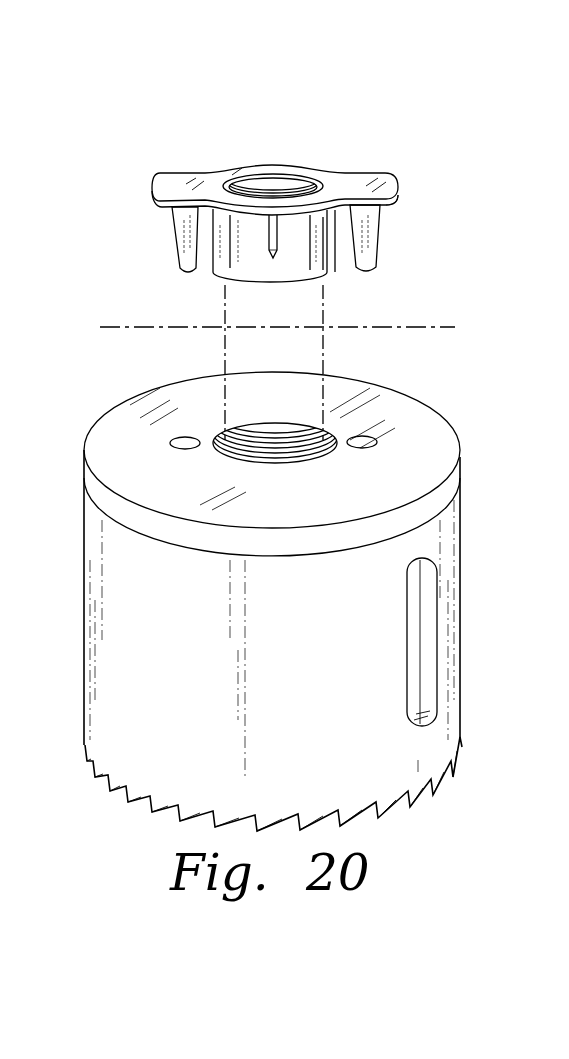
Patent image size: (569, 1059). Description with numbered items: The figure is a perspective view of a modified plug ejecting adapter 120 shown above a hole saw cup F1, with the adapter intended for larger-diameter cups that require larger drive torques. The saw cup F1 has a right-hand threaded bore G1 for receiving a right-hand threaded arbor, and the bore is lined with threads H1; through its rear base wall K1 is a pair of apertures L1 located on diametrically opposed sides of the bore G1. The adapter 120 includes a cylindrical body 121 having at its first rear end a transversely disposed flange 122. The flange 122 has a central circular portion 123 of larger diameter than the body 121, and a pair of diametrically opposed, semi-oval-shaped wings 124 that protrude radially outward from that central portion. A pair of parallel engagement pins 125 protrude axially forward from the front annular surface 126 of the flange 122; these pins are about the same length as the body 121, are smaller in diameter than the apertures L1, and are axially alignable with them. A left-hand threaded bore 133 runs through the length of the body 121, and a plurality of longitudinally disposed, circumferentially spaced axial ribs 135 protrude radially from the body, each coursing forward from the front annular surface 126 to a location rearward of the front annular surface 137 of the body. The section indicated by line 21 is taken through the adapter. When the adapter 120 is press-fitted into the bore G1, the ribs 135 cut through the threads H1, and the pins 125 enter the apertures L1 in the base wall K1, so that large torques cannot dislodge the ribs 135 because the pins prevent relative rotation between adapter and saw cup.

The modified adapter 120 is at (282, 219).
The cylindrical body 121 is at (243, 272).
The flange 122 is at (213, 168).
The central circular portion 123 is at (271, 141).
The wings 124 is at (167, 187).
The engagement pins 125 is at (172, 226).
The front annular surface 126 is at (402, 200).
The left-hand threaded bore 133 is at (292, 184).
The axial ribs 135 is at (217, 226).
The front annular surface 137 is at (275, 292).
The section line 21- 21 is at (448, 295).
The hole saw cup F1 is at (306, 584).
The rear base wall K1 is at (440, 447).
The threads H1 is at (332, 400).
The threaded bore G1 is at (258, 432).
The apertures L1 is at (185, 438).